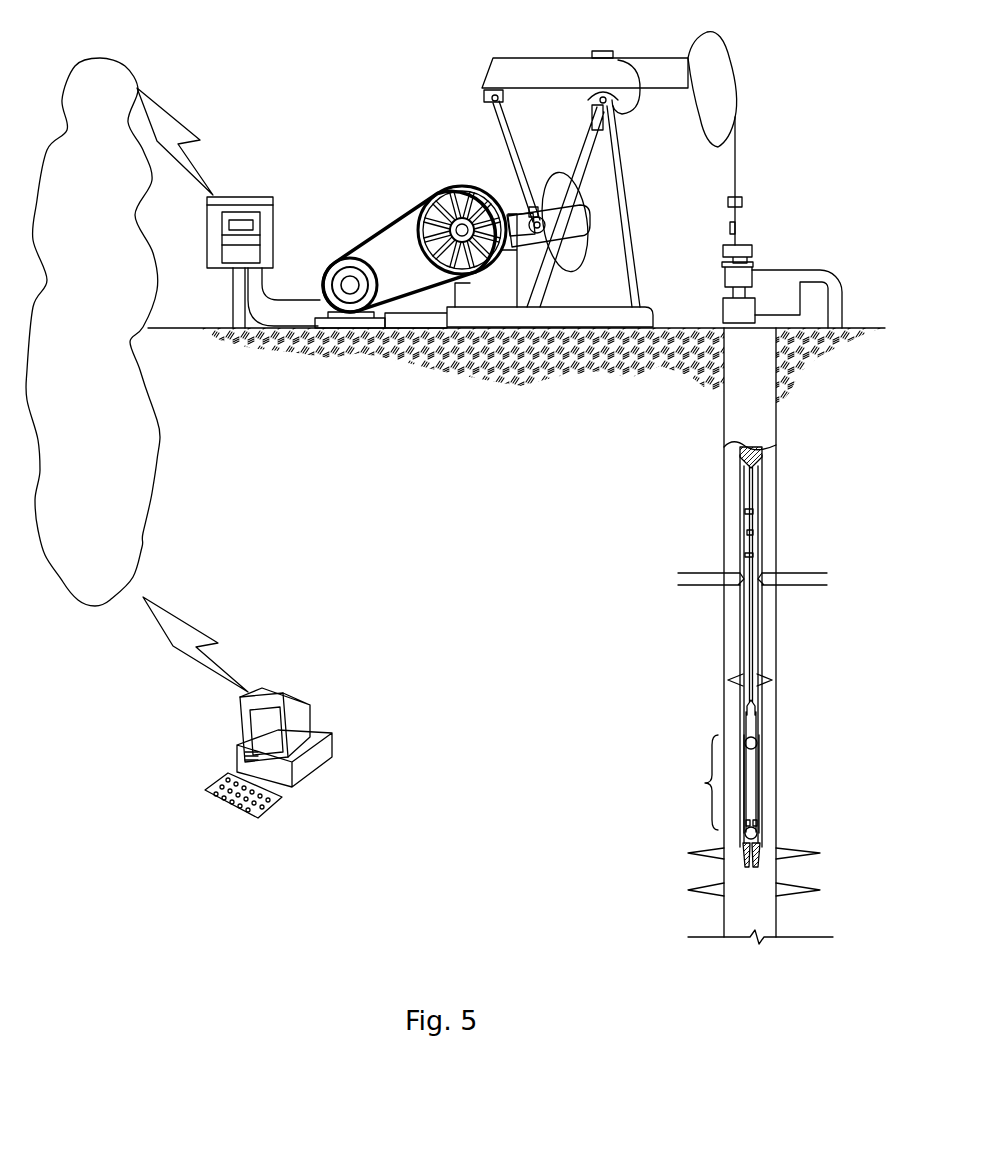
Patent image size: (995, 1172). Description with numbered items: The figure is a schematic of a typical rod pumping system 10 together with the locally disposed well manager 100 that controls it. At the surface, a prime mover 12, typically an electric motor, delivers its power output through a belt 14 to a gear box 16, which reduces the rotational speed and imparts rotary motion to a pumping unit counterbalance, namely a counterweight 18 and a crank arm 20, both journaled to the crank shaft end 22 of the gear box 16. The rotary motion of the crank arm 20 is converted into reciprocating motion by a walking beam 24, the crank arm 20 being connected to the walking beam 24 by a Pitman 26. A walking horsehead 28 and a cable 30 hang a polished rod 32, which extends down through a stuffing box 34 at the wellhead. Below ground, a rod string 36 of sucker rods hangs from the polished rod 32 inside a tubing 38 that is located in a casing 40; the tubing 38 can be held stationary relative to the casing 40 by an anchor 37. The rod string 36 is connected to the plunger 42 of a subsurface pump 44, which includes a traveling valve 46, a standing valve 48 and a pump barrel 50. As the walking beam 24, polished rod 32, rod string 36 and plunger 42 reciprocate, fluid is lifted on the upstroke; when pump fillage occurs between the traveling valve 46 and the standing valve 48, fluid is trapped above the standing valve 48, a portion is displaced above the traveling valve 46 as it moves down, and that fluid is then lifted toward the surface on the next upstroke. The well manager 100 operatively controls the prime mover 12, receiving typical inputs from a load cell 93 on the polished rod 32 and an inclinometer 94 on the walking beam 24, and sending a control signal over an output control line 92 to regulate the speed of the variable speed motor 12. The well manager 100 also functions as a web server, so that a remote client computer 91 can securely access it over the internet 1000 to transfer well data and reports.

The rod pumping system 10 is at (398, 72).
The prime mover 12 is at (342, 261).
The belt 14 is at (392, 232).
The gear box 16 is at (448, 180).
The counterweight 18 is at (556, 170).
The crank arm 20 is at (588, 224).
The crank shaft end 22 is at (522, 216).
The walking beam 24 is at (578, 57).
The Pitman 26 is at (500, 130).
The walking horsehead 28 is at (735, 66).
The cable 30 is at (738, 147).
The polished rod 32 is at (742, 232).
The stuffing box 34 is at (760, 252).
The rod string 36 is at (740, 540).
The anchor 37 is at (778, 672).
The tubing 38 is at (738, 496).
The casing 40 is at (738, 420).
The plunger 42 is at (765, 722).
The subsurface pump 44 is at (695, 782).
The traveling valve 46 is at (760, 745).
The standing valve 48 is at (760, 835).
The pump barrel 50 is at (765, 785).
The remote client computer 91 is at (332, 740).
The output control line 92 is at (300, 298).
The load cell 93 is at (730, 236).
The inclinometer 94 is at (601, 51).
The well manager 100 is at (222, 236).
The internet 1000 is at (160, 437).